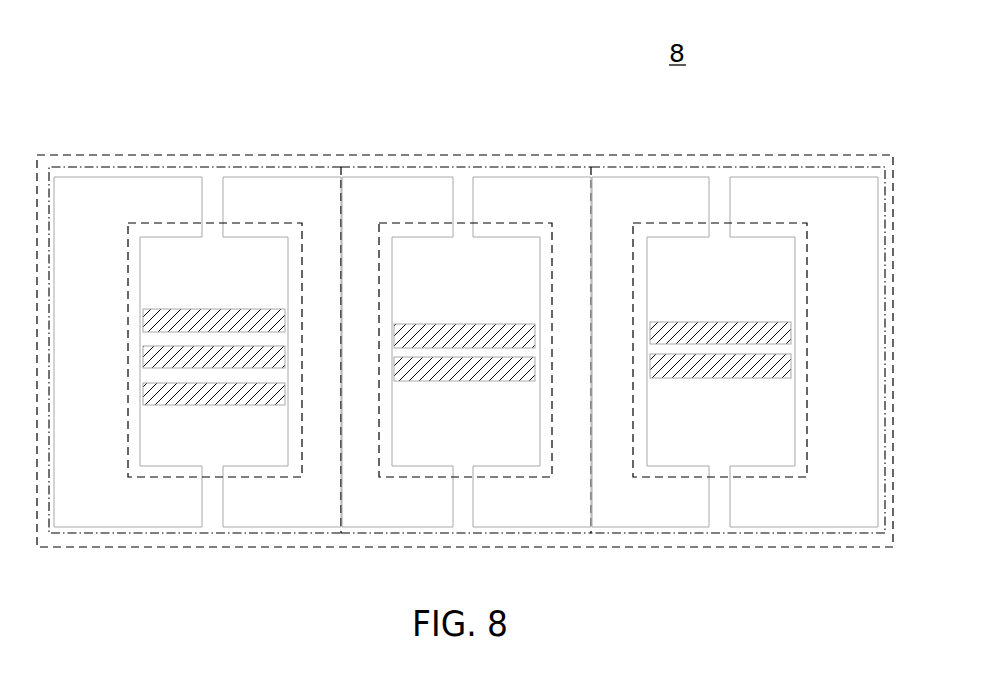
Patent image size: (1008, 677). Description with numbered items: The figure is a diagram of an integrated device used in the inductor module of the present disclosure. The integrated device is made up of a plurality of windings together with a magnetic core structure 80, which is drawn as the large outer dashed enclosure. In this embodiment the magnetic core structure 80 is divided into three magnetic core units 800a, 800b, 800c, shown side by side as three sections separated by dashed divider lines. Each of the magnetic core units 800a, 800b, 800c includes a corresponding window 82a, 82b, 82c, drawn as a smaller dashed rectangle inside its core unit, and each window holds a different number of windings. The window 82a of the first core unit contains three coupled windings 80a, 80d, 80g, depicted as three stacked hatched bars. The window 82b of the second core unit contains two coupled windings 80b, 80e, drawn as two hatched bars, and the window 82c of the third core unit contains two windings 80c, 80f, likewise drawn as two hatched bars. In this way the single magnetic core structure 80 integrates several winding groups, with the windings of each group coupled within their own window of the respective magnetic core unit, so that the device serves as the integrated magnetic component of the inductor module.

The magnetic core structure 80 is at (765, 157).
The magnetic core unit 800a is at (160, 168).
The magnetic core unit 800b is at (438, 168).
The magnetic core unit 800c is at (688, 168).
The window 82a is at (268, 223).
The window 82b is at (520, 223).
The window 82c is at (777, 223).
The winding 80a is at (212, 313).
The winding 80b is at (472, 325).
The winding 80c is at (715, 322).
The winding 80d is at (145, 357).
The winding 80e is at (475, 382).
The winding 80f is at (730, 378).
The winding 80g is at (220, 405).